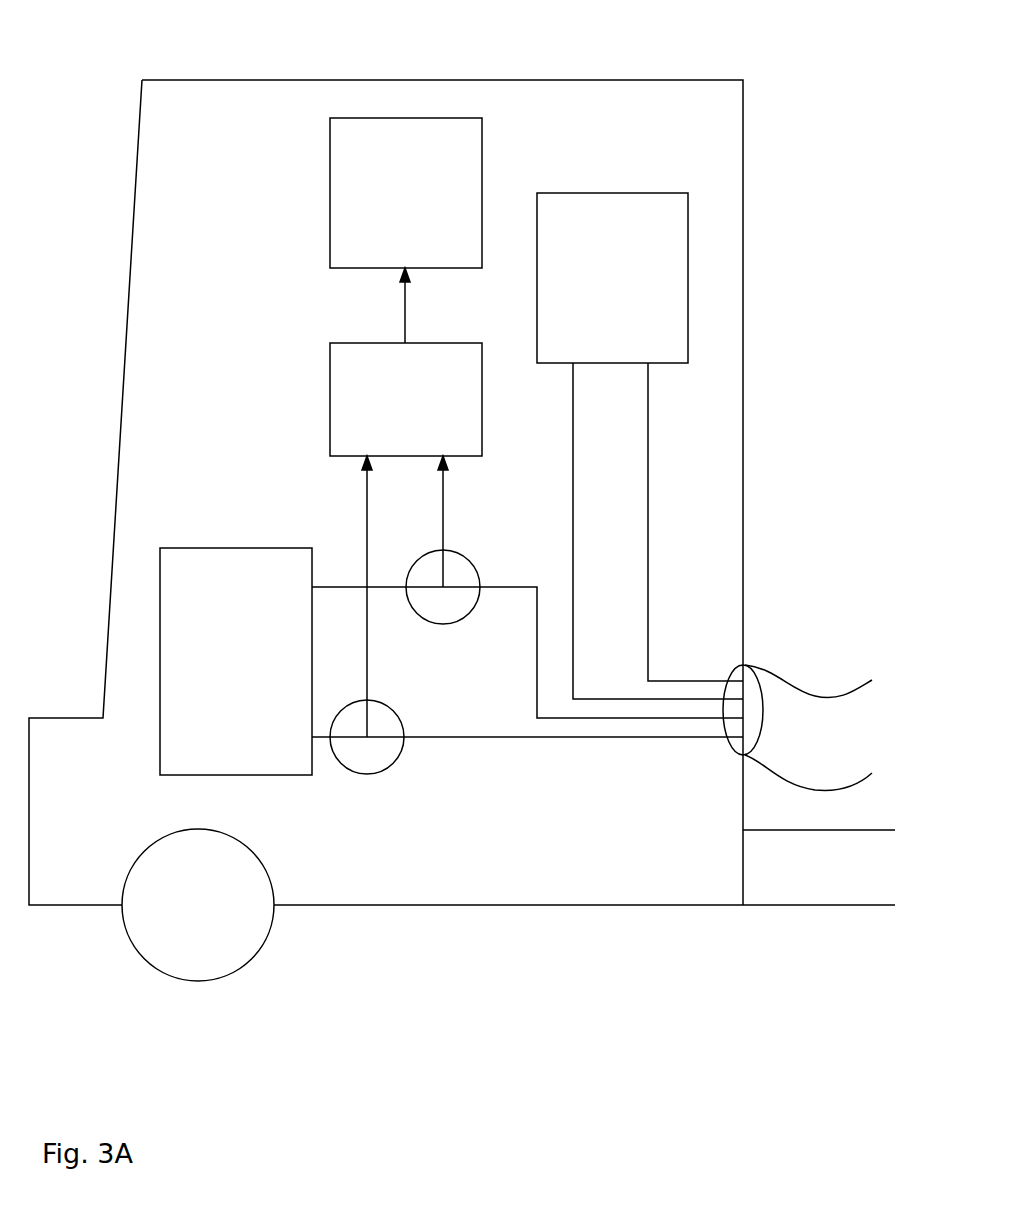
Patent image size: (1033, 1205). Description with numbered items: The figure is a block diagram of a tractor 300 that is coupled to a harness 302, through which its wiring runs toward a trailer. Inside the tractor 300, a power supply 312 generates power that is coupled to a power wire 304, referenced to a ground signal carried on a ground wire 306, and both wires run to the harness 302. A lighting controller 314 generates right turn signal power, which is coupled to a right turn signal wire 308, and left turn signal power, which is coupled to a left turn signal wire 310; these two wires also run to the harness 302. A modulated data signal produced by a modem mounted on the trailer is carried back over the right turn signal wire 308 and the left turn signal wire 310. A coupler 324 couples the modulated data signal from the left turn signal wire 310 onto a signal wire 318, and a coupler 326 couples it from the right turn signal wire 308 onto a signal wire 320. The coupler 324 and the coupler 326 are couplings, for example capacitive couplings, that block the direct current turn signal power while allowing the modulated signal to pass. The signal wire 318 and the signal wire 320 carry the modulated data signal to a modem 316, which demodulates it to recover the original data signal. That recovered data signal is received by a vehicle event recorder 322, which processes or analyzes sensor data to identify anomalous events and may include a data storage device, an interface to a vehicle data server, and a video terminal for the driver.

The tractor 300 is at (243, 80).
The harness 302 is at (855, 690).
The power wire 304 is at (704, 680).
The ground wire 306 is at (618, 698).
The right turn signal wire 308 is at (515, 587).
The left turn signal wire 310 is at (600, 740).
The power supply 312 is at (655, 192).
The lighting controller 314 is at (228, 548).
The modem 316 is at (330, 362).
The signal wire 318 is at (367, 488).
The signal wire 320 is at (443, 523).
The vehicle event recorder 322 is at (330, 157).
The coupler 324 is at (394, 760).
The coupler 326 is at (442, 625).